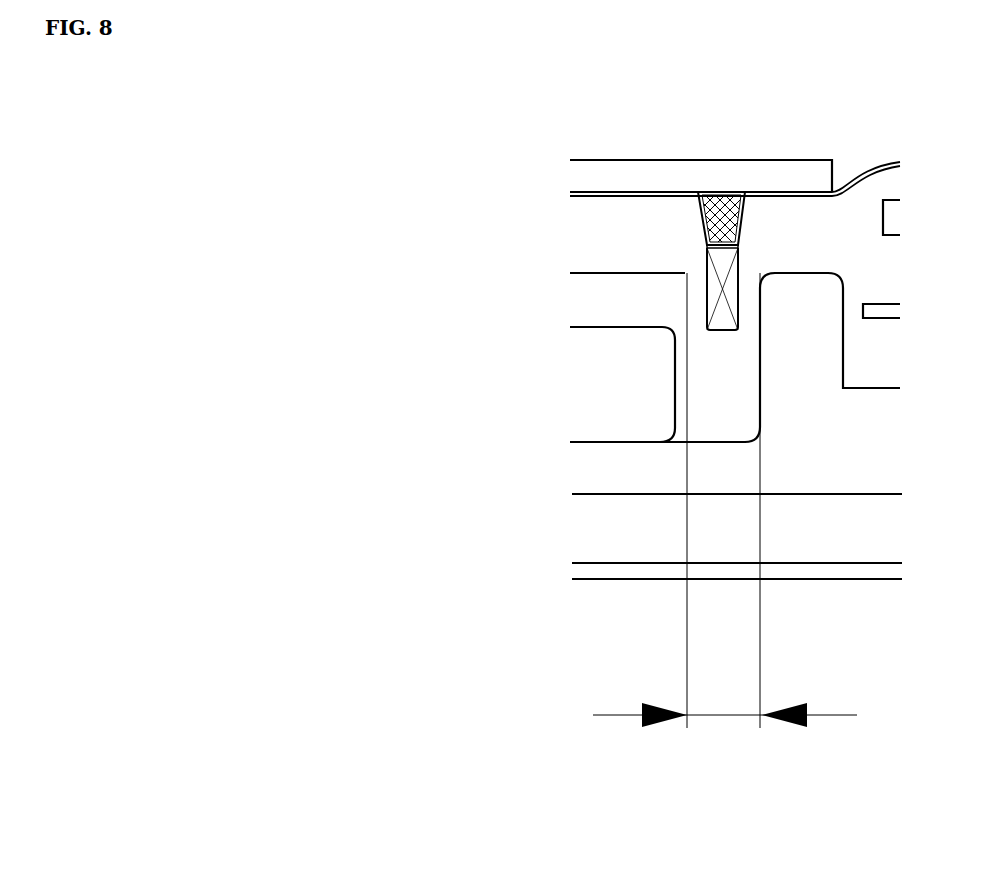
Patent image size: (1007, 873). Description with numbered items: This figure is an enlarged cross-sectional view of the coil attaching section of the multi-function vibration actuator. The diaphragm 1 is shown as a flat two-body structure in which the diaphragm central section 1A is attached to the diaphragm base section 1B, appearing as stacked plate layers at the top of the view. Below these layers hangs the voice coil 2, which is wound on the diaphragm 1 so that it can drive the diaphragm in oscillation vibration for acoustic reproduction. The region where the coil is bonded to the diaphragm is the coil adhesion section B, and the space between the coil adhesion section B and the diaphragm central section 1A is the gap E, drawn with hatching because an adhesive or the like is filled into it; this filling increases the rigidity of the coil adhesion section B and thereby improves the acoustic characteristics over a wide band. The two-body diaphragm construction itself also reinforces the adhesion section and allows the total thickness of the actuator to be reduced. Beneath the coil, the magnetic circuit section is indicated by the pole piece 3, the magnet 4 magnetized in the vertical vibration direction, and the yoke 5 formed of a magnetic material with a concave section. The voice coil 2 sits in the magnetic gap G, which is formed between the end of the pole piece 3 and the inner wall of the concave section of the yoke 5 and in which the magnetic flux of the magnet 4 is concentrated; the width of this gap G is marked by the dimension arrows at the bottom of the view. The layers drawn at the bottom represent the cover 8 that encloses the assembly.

The diaphragm 1 is at (423, 228).
The diaphragm central section 1A is at (617, 178).
The diaphragm base section 1B is at (570, 195).
The voice coil 2 is at (722, 266).
The pole piece 3 is at (610, 298).
The magnet 4 is at (612, 362).
The yoke 5 is at (603, 468).
The cover 8 is at (633, 568).
The gap E is at (720, 217).
The coil adhesion section B is at (737, 247).
The magnetic gap G is at (725, 544).